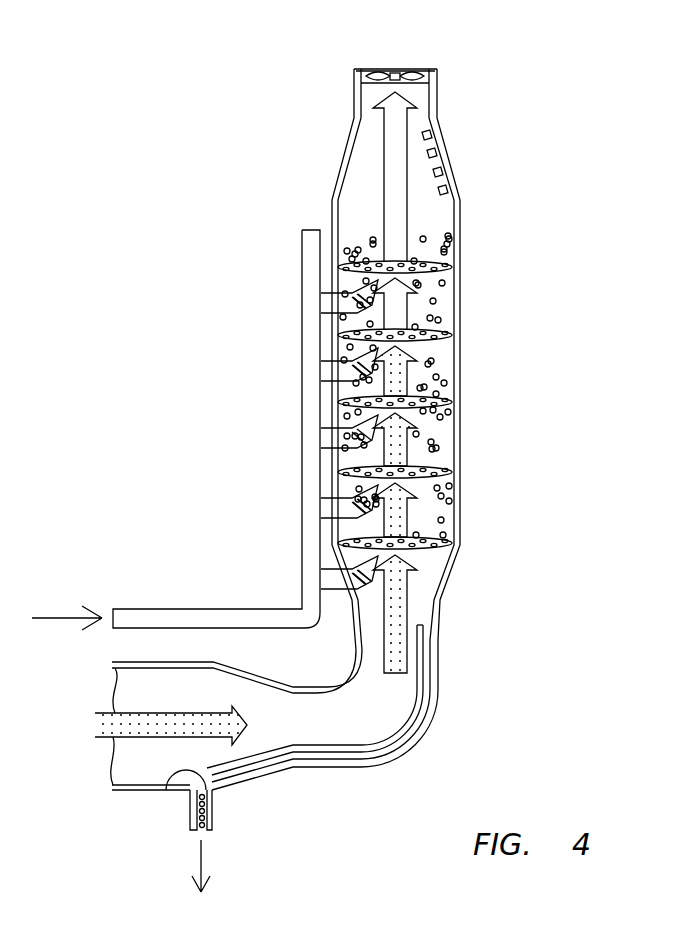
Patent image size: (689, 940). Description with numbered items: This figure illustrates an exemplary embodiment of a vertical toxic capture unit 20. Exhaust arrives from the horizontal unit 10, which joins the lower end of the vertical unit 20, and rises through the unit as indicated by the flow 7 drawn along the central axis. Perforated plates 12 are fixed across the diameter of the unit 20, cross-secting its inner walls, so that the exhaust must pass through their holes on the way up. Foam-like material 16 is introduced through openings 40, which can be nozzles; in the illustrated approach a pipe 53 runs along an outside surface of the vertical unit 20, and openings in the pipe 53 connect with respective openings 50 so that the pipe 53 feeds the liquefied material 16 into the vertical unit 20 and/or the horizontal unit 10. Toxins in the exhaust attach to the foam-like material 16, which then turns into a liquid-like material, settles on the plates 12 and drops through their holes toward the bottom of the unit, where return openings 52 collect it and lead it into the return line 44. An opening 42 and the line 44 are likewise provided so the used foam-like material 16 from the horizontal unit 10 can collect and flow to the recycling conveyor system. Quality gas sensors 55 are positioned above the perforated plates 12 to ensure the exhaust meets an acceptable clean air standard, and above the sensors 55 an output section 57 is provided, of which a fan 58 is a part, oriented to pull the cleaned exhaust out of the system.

The gas flow 7 is at (382, 197).
The horizontal unit 10 is at (117, 663).
The perforated plates 12 is at (446, 400).
The foam-like material 16 is at (348, 314).
The vertical toxic capture unit 20 is at (348, 138).
The openings 40 is at (352, 350).
The opening 42 is at (170, 788).
The return line 44 is at (212, 800).
The openings 50 is at (352, 282).
The return openings 52 is at (428, 680).
The pipe 53 is at (302, 248).
The gas sensors 55 is at (444, 167).
The output section 57 is at (408, 72).
The fan 58 is at (378, 72).